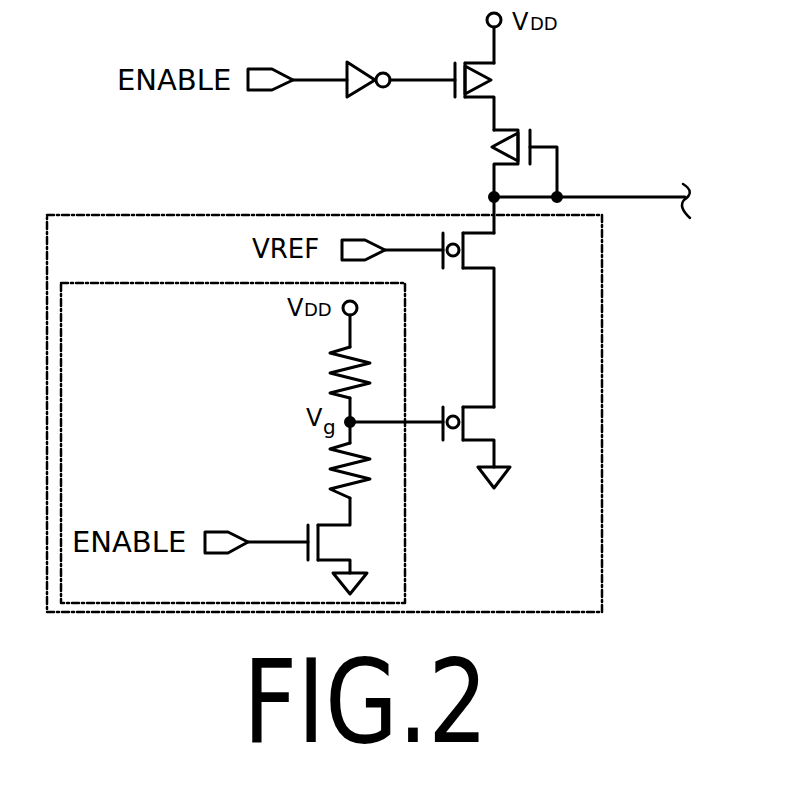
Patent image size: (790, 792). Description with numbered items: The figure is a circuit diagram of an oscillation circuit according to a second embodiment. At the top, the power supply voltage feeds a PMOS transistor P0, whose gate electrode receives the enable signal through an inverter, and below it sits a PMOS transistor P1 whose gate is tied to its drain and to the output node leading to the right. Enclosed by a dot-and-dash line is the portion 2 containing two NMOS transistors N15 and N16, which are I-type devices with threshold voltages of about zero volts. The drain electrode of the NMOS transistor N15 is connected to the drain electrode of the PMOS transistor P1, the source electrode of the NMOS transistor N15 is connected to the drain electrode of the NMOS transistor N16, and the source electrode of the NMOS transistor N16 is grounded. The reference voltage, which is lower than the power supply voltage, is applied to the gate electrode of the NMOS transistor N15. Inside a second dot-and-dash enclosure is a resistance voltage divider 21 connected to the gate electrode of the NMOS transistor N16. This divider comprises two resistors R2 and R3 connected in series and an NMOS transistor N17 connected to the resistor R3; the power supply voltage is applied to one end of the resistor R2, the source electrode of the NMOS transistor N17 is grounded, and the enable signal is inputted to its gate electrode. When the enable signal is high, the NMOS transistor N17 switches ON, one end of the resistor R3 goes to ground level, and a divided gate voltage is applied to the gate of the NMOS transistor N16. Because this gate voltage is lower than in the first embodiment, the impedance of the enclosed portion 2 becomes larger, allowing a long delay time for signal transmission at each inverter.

The PMOS transistor P0 is at (502, 81).
The PMOS transistor P1 is at (487, 147).
The NMOS transistor N15 is at (482, 251).
The NMOS transistor N16 is at (482, 423).
The NMOS transistor N17 is at (348, 549).
The resistor R2 is at (323, 373).
The resistor R3 is at (323, 469).
The portion enclosed by the dot-and-dash line 2 is at (602, 381).
The resistance voltage divider 21 is at (403, 580).